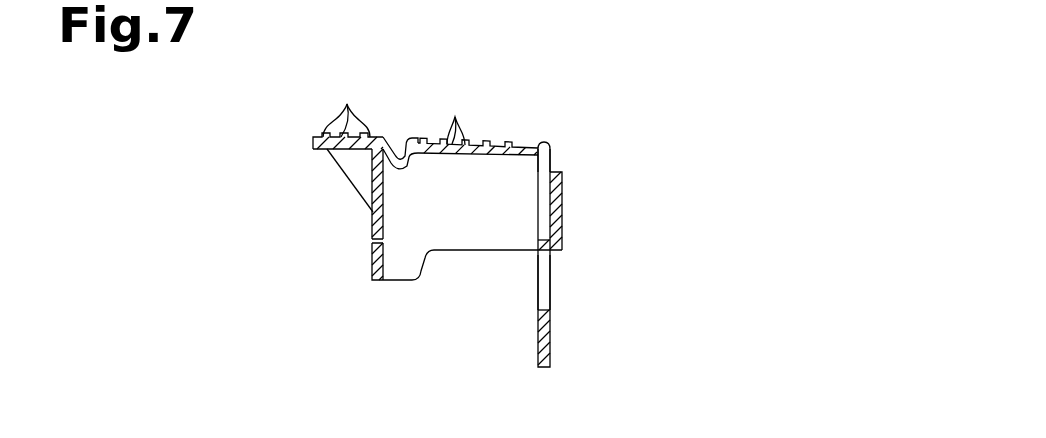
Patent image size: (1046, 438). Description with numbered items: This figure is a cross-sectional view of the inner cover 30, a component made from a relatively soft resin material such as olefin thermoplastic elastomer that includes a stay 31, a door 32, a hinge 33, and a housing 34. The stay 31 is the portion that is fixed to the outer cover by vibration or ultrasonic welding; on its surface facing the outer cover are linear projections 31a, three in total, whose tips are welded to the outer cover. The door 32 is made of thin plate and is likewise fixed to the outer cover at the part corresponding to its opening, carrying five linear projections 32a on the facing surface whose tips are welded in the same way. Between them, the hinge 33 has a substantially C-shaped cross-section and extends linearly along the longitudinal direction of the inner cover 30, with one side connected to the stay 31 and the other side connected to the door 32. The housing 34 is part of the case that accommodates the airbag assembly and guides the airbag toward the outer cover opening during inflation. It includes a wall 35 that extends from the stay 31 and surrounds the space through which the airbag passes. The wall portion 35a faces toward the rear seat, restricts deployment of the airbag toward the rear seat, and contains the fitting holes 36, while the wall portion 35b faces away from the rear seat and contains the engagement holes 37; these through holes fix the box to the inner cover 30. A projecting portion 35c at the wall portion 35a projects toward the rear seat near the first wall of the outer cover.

The inner cover 30 is at (568, 90).
The stay 31 is at (323, 152).
The linear projections 31a is at (347, 106).
The door 32 is at (470, 156).
The linear projections 32a is at (455, 117).
The hinge 33 is at (406, 170).
The housing 34 is at (627, 125).
The wall 35 is at (480, 251).
The wall portion 35a is at (551, 160).
The wall portion 35b is at (373, 268).
The projecting portion 35c is at (562, 192).
The fitting holes 36 is at (547, 305).
The engagement holes 37 is at (373, 217).